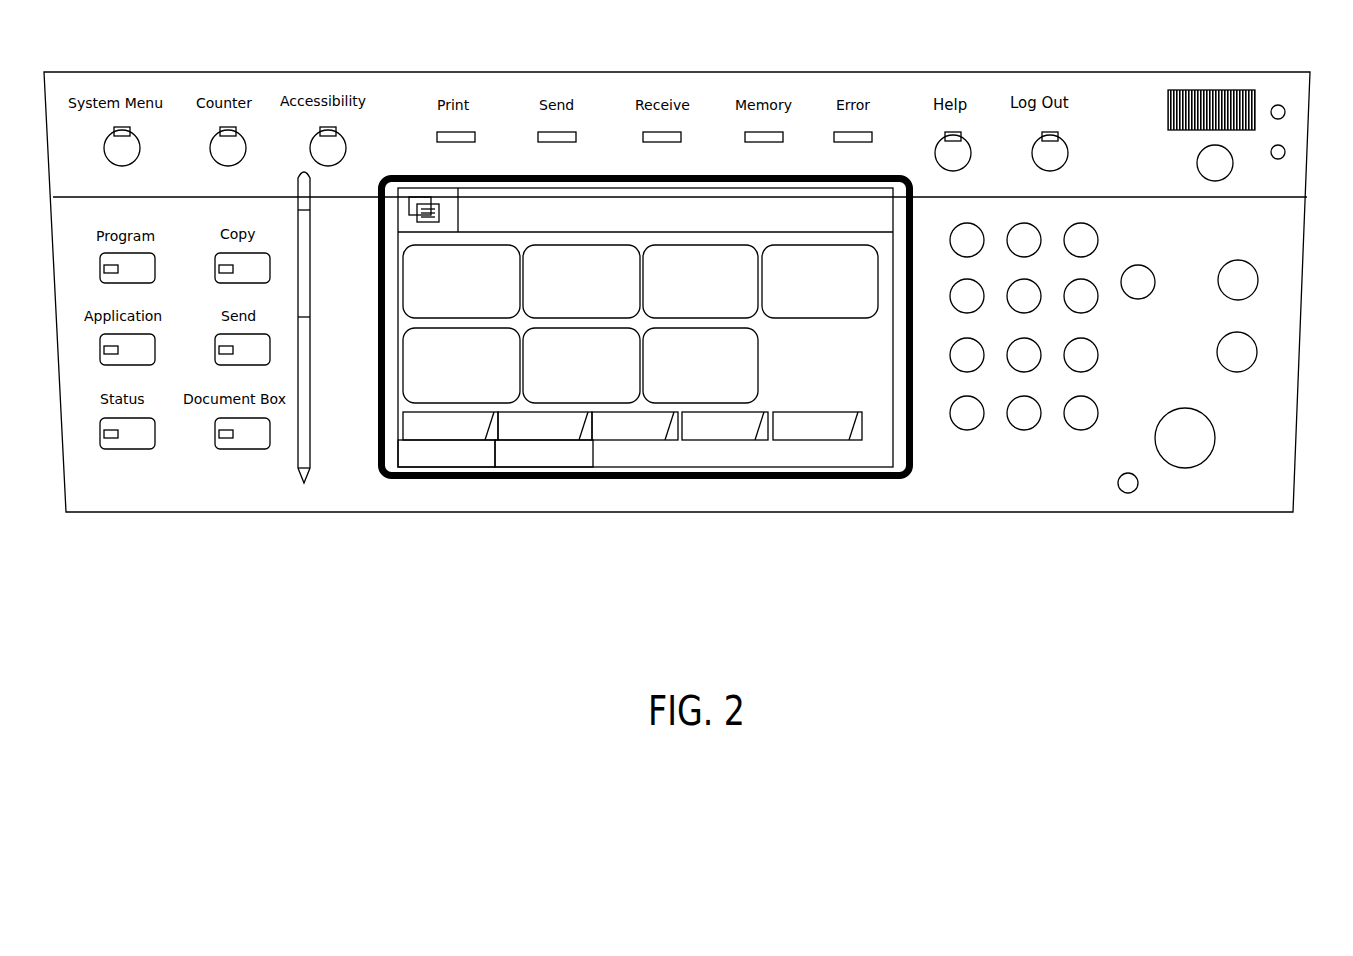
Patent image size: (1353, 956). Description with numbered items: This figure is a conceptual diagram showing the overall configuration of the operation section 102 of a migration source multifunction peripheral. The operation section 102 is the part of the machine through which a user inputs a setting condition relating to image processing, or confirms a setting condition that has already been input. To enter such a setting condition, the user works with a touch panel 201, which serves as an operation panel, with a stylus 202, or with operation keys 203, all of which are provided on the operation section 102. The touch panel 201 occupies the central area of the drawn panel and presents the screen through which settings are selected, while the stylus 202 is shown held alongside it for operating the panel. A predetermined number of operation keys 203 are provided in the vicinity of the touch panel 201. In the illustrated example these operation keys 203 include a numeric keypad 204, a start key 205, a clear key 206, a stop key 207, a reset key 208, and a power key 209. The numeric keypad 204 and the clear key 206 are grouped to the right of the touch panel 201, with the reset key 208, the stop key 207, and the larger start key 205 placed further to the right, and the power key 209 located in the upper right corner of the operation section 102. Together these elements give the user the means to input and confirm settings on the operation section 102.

The operation section 102 is at (691, 527).
The touch panel 201 is at (485, 502).
The stylus 202 is at (303, 483).
The operation keys 203 is at (927, 540).
The numeric keypad 204 is at (1017, 458).
The start key 205 is at (1184, 450).
The clear key 206 is at (1130, 297).
The stop key 207 is at (1238, 360).
The reset key 208 is at (1240, 288).
The power key 209 is at (1222, 170).